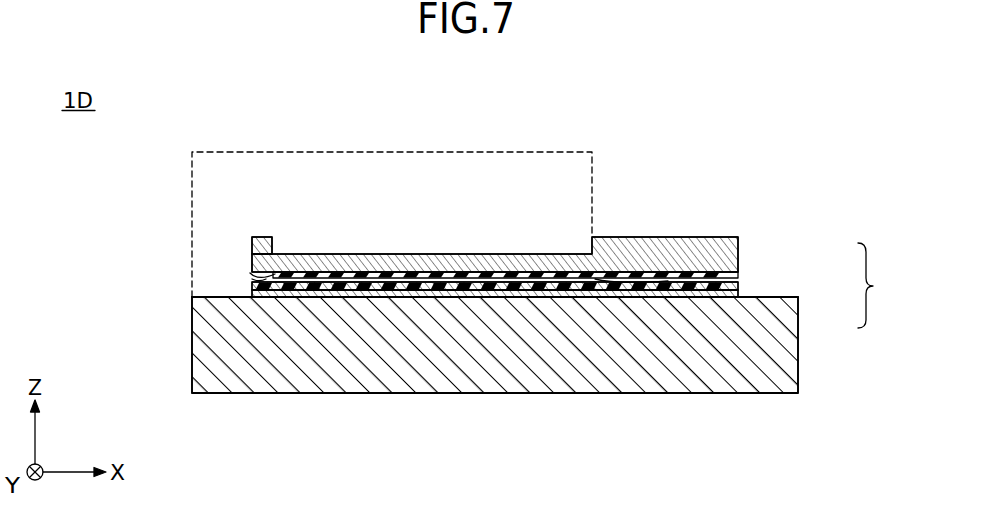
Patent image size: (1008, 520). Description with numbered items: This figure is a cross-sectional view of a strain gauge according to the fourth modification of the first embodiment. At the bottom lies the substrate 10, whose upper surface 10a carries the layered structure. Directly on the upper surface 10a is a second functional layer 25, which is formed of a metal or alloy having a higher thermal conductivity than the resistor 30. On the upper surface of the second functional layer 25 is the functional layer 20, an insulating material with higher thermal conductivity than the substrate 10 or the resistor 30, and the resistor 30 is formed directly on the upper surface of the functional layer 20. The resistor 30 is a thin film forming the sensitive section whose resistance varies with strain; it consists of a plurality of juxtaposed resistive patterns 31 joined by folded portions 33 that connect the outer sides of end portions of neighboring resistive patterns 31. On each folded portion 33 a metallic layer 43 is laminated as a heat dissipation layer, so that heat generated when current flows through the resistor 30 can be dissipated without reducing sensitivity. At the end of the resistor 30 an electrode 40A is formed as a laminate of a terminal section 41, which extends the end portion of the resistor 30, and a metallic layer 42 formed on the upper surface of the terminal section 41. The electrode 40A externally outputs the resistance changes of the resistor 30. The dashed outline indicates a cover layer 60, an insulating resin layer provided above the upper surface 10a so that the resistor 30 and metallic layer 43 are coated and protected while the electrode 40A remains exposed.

The substrate 10 is at (210, 343).
The upper surface 10a is at (222, 296).
The functional layer 20 is at (258, 280).
The second functional layer 25 is at (256, 288).
The resistor 30 is at (494, 387).
The resistive pattern 31 is at (433, 280).
The folded portion 33 is at (262, 279).
The electrode 40A is at (890, 285).
The terminal section 41 is at (672, 284).
The metallic layer 42 is at (738, 243).
The metallic layer 43 is at (263, 237).
The cover layer 60 is at (487, 150).